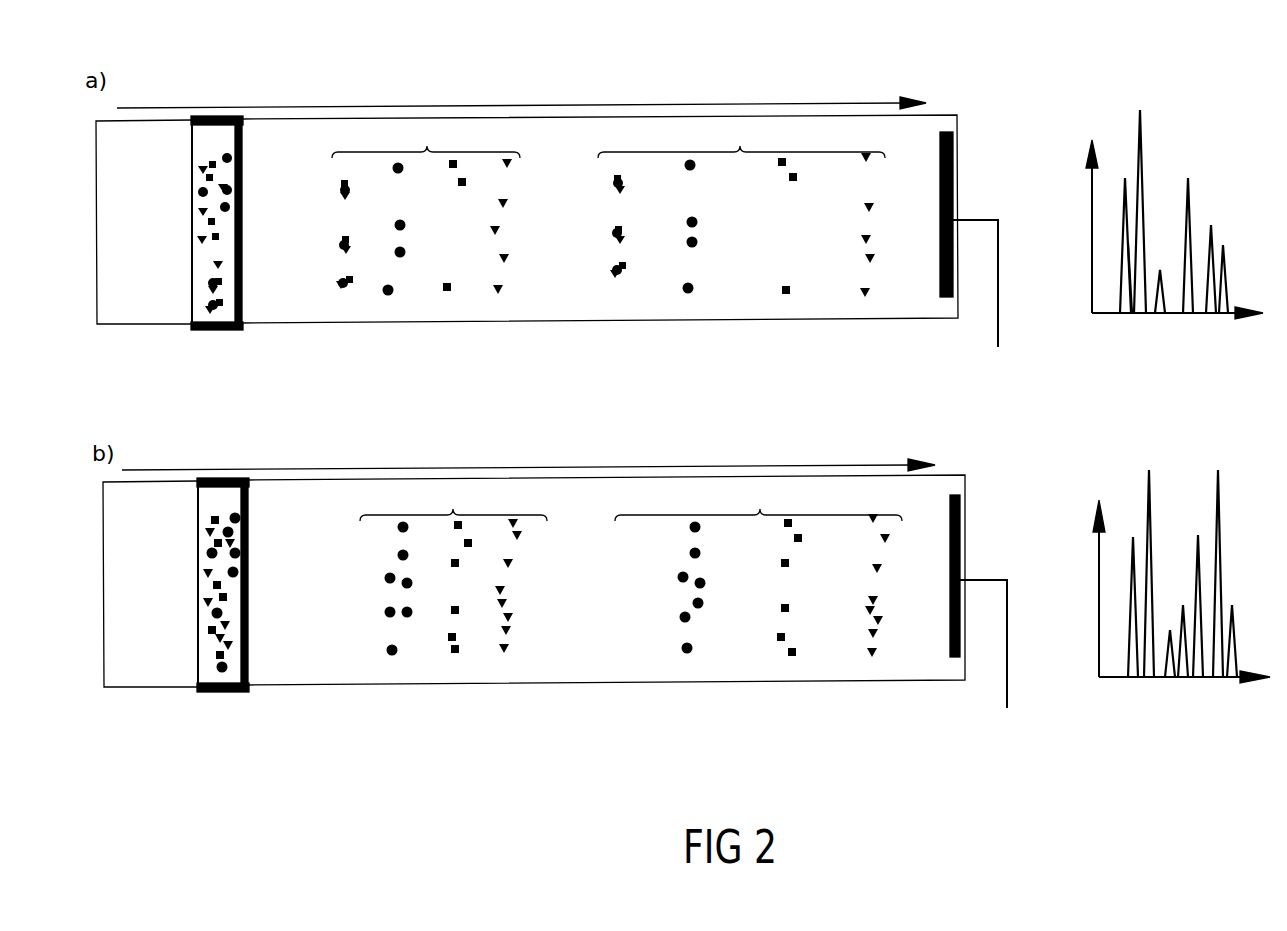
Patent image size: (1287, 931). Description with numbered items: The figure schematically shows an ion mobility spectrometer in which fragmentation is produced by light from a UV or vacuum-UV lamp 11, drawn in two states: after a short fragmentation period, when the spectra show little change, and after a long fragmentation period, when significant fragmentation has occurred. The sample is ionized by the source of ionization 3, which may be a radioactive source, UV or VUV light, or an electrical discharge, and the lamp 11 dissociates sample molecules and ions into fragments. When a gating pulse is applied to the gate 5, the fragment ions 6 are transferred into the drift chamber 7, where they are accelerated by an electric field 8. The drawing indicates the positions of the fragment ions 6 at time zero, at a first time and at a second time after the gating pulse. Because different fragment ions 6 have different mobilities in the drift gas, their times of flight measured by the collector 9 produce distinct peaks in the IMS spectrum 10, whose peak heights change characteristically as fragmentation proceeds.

The source of ionization 3 is at (213, 329).
The gate 5 is at (244, 137).
The fragment ions 6 is at (245, 203).
The drift chamber 7 is at (603, 400).
The electric field 8 is at (526, 263).
The collector 9 is at (956, 420).
The IMS spectrum 10 is at (1140, 389).
The UV or vacuum-UV lamp 11 is at (147, 403).